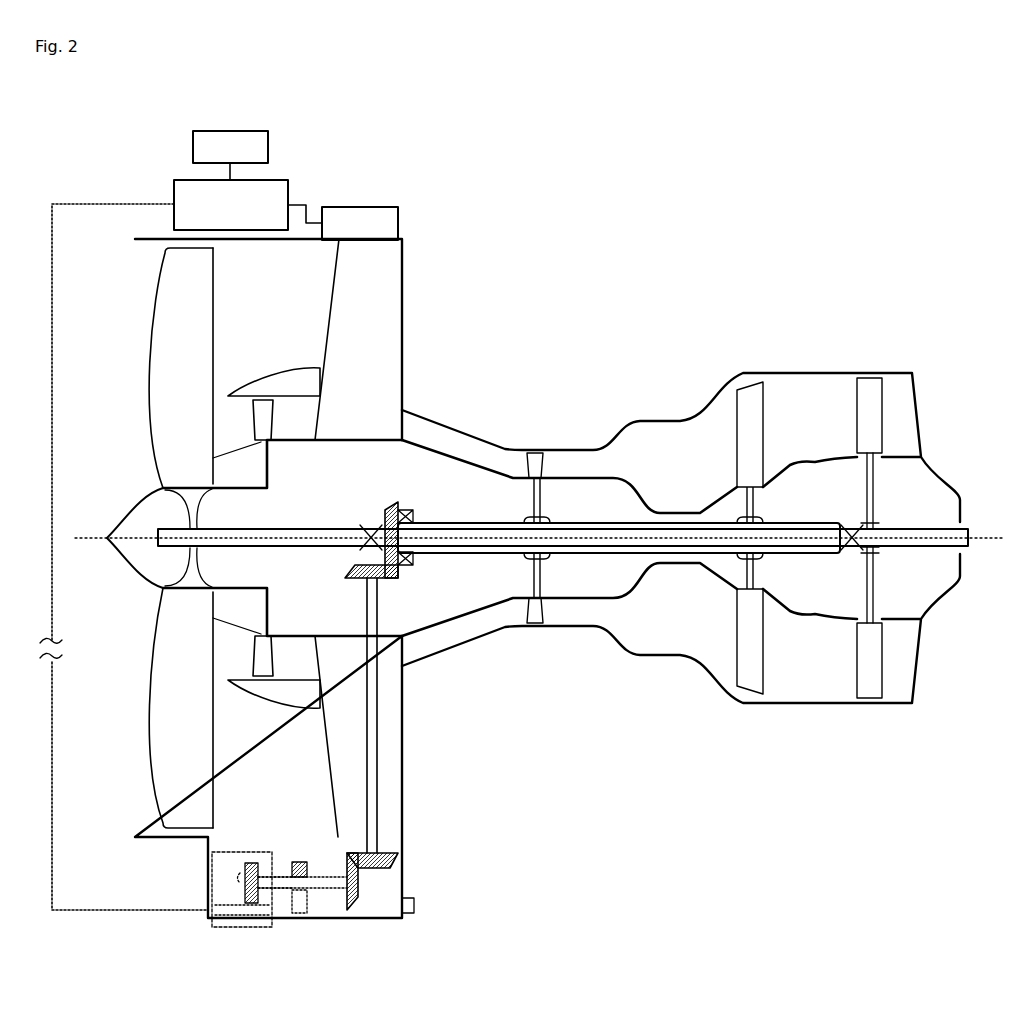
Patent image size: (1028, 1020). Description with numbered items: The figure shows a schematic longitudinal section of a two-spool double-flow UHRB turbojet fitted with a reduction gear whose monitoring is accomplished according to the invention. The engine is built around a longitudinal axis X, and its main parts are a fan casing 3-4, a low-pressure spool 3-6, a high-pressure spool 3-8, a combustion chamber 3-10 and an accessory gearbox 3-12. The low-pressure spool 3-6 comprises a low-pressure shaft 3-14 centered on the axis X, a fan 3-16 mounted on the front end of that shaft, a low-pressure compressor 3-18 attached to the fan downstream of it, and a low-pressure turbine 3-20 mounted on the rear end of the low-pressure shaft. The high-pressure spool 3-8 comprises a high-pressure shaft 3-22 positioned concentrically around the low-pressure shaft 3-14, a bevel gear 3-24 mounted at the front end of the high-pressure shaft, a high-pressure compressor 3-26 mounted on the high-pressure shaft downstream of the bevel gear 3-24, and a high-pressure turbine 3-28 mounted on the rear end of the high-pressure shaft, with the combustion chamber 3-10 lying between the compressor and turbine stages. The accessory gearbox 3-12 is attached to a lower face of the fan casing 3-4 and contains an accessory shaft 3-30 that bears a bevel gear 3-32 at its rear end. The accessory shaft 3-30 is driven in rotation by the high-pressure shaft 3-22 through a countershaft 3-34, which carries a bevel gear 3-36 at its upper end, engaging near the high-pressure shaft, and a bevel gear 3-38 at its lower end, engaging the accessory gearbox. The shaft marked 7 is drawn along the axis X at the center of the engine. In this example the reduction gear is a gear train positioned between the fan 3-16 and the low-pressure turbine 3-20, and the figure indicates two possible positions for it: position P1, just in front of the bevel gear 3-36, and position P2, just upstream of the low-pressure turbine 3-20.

The fan casing 3-4 is at (405, 286).
The low-pressure spool 3-6 is at (284, 527).
The high-pressure spool 3-8 is at (618, 514).
The combustion chamber 3-10 is at (705, 476).
The accessory gearbox 3-12 is at (280, 905).
The low-pressure shaft 3-14 is at (262, 525).
The fan 3-16 is at (177, 333).
The low-pressure compressor 3-18 is at (260, 402).
The low-pressure turbine 3-20 is at (870, 375).
The high-pressure shaft 3-22 is at (712, 555).
The bevel gear 3-24 is at (392, 502).
The high-pressure compressor 3-26 is at (537, 455).
The high-pressure turbine 3-28 is at (751, 395).
The accessory shaft 3-30 is at (322, 862).
The bevel gear 3-32 is at (356, 905).
The countershaft 3-34 is at (367, 733).
The bevel gear 3-36 is at (348, 580).
The bevel gear 3-38 is at (396, 860).
The main shaft 7 is at (493, 553).
The first reduction gear position P1 is at (370, 527).
The second reduction gear position P2 is at (850, 527).
The longitudinal axis X is at (540, 541).